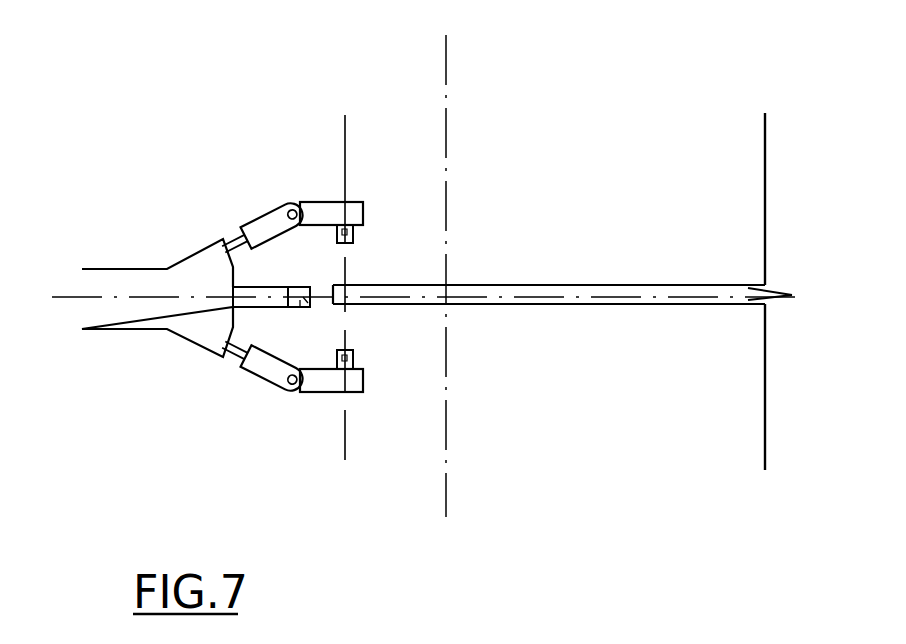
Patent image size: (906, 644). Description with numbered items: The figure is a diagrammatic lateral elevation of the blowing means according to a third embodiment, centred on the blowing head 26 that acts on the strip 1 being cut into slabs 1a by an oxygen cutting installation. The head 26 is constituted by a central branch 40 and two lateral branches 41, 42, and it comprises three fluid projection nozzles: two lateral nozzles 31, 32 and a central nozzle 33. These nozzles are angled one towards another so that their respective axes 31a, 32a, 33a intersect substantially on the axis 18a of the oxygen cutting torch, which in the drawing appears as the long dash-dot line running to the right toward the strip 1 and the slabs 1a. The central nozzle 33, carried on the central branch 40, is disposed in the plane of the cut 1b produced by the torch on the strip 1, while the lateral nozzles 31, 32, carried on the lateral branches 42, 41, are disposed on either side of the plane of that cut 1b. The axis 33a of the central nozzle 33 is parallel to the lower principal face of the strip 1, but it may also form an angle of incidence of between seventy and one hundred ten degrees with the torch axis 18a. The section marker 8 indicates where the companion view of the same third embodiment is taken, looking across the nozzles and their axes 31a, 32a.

The strip 1 is at (660, 92).
The slabs 1a is at (765, 133).
The cut 1b is at (788, 294).
The section line of FIG. 8 is at (452, 47).
The axis of the cutting torch 18a is at (340, 301).
The blowing head 26 is at (220, 230).
The lateral nozzle 31 is at (354, 237).
The axis of lateral nozzle 31 31a is at (345, 140).
The lateral nozzle 32 is at (355, 352).
The axis of lateral nozzle 32 32a is at (345, 420).
The central nozzle 33 is at (299, 307).
The axis of central nozzle 33a is at (63, 299).
The central branch 40 is at (122, 340).
The lateral branch 41 is at (283, 392).
The lateral branch 42 is at (276, 206).